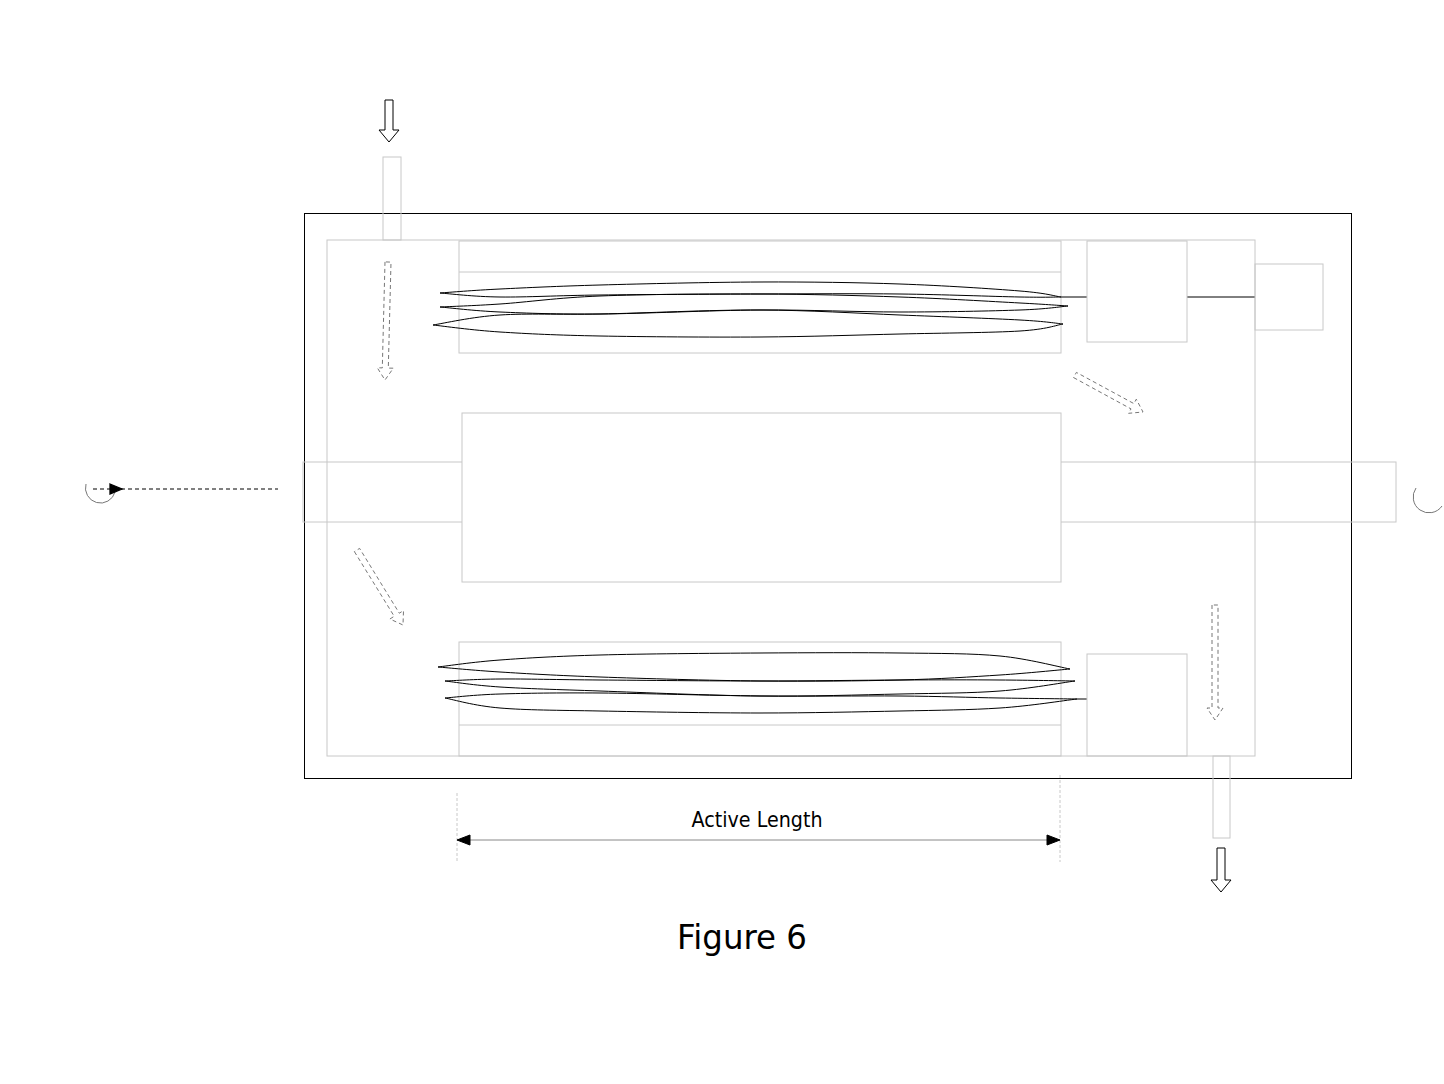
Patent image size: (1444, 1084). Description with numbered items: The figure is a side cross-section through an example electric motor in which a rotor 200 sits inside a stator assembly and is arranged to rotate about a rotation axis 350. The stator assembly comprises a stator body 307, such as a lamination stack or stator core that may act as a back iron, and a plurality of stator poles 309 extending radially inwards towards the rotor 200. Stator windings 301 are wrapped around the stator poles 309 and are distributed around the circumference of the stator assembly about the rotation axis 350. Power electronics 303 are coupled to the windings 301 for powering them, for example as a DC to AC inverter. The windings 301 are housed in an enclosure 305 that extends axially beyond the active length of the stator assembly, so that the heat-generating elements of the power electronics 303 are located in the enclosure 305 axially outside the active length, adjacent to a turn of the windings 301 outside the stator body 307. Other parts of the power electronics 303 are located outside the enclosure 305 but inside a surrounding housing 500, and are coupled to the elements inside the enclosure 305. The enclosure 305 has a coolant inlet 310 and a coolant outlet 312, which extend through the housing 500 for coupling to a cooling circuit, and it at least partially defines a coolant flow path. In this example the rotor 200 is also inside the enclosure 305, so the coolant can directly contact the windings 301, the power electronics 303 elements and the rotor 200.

The housing 500 is at (303, 633).
The enclosure 305 is at (327, 722).
The coolant inlet 310 is at (390, 144).
The coolant outlet 312 is at (1222, 848).
The stator body 307 is at (772, 239).
The stator poles 309 is at (588, 272).
The stator windings 301 is at (850, 295).
The power electronics 303 is at (1163, 275).
The rotor 200 is at (1058, 497).
The rotation axis 350 is at (242, 489).